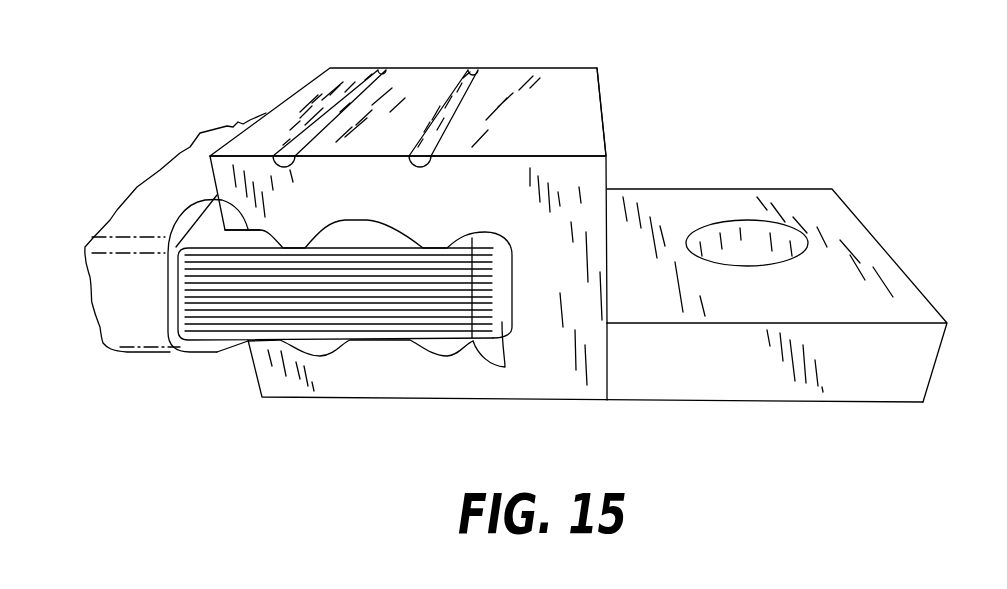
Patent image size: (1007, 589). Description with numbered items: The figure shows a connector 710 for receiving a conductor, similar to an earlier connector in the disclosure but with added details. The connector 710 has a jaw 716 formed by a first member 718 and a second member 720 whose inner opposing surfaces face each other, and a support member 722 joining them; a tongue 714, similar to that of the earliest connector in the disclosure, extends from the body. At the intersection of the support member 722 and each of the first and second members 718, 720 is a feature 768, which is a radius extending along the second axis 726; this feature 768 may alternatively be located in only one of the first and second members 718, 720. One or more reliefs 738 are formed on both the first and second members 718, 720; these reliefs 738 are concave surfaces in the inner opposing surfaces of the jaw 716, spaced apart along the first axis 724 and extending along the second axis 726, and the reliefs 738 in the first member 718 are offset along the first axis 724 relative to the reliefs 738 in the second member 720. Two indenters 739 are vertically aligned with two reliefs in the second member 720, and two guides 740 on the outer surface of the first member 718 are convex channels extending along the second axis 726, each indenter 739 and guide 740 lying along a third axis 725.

The connector 710 is at (501, 237).
The tongue 714 is at (895, 367).
The jaw 716 is at (116, 178).
The first member 718 is at (224, 182).
The second member 720 is at (267, 372).
The support member 722 is at (580, 268).
The first axis 724 is at (786, 433).
The third axis 725 is at (274, 97).
The second axis 726 is at (286, 32).
The reliefs 738 is at (213, 197).
The indenters 739 is at (435, 247).
The guides 740 is at (473, 78).
The feature 768 is at (505, 367).